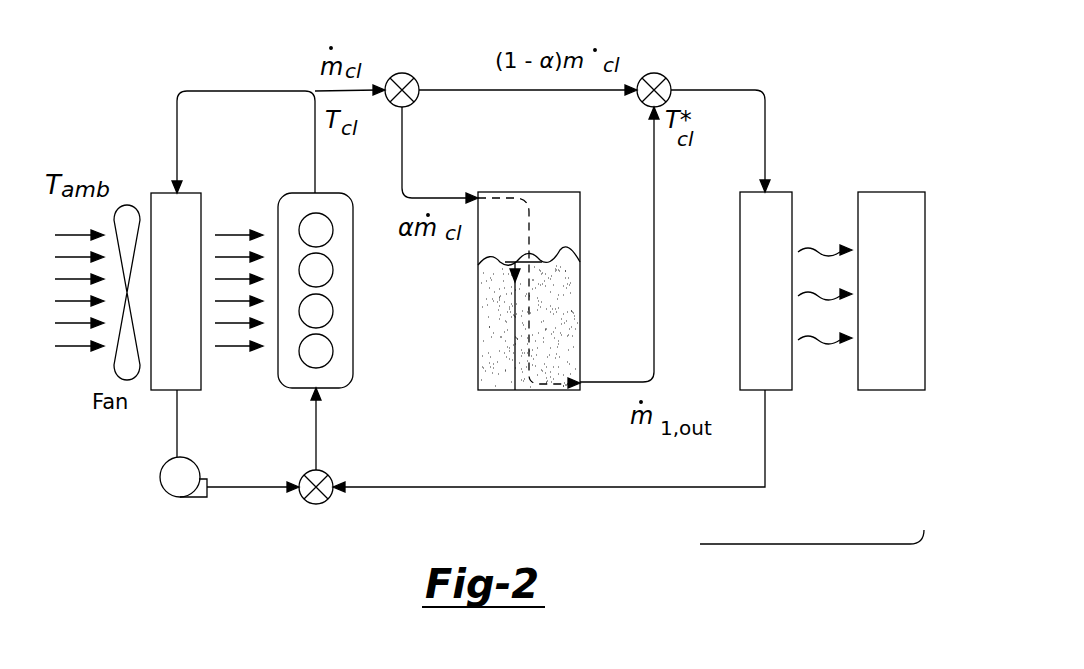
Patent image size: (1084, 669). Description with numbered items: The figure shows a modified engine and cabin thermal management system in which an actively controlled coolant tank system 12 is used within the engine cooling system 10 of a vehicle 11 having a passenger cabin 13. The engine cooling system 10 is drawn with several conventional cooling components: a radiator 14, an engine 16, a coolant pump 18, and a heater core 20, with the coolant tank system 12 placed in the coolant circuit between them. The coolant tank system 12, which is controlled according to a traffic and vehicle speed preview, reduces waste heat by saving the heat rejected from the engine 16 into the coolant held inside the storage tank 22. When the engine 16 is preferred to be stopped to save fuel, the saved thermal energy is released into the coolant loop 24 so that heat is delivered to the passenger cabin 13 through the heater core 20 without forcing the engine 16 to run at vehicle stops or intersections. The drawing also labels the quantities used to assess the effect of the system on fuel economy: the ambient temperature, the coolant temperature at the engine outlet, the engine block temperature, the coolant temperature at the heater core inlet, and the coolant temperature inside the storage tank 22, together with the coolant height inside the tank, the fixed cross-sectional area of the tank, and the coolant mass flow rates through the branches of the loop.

The engine cooling system 10 is at (188, 55).
The vehicle 11 is at (805, 545).
The actively controlled coolant tank system 12 is at (466, 286).
The passenger cabin 13 is at (890, 192).
The radiator 14 is at (175, 190).
The engine 16 is at (354, 312).
The coolant pump 18 is at (158, 476).
The heater core 20 is at (740, 290).
The storage tank 22 is at (580, 222).
The coolant loop 24 is at (716, 89).